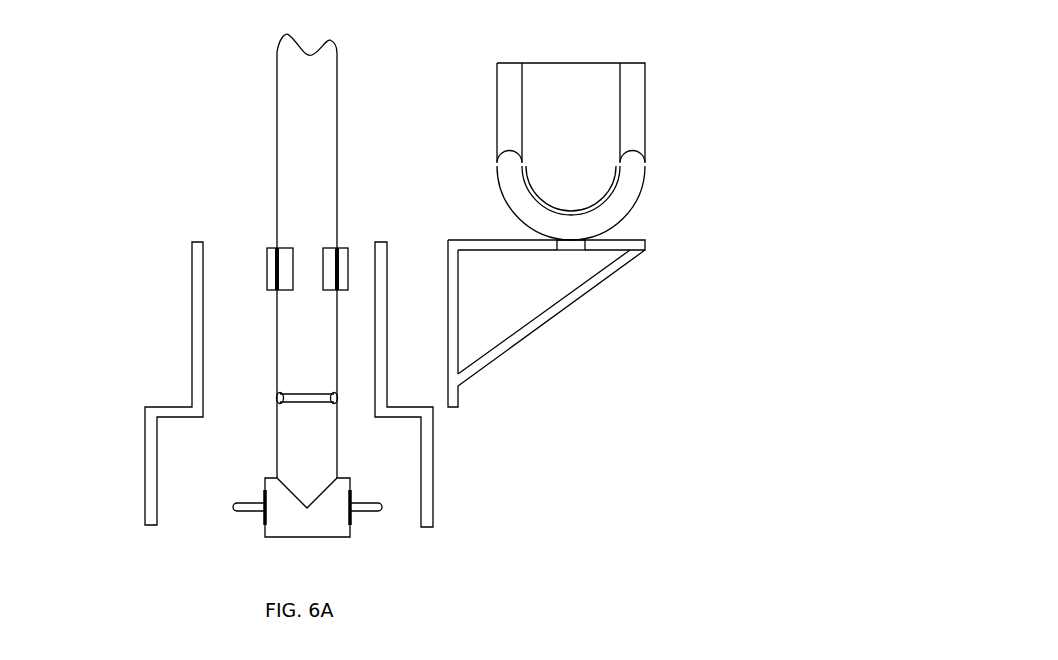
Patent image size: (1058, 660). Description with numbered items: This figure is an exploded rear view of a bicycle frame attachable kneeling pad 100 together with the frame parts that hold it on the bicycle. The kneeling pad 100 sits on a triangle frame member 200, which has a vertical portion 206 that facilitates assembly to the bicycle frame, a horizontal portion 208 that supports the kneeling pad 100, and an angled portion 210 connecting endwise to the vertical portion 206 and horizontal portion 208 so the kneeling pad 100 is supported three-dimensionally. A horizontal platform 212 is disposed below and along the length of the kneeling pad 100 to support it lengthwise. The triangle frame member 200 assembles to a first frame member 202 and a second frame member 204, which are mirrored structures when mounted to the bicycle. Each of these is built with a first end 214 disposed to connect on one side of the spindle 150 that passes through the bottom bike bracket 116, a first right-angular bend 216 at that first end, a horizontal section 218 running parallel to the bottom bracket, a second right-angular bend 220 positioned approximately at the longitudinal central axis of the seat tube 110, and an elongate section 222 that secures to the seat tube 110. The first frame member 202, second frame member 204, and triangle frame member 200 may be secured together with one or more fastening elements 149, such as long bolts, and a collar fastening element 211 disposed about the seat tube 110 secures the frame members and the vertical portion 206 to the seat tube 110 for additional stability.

The kneeling pad 100 is at (683, 45).
The seat tube 110 is at (337, 126).
The bottom bike bracket 116 is at (266, 479).
The fastening elements 149 is at (300, 392).
The spindle 150 is at (364, 512).
The triangle frame member 200 is at (564, 291).
The first frame member 202 is at (150, 383).
The second frame member 204 is at (472, 522).
The vertical portion 206 is at (448, 310).
The horizontal portion 208 is at (482, 241).
The angled portion 210 is at (545, 320).
The collar fastening element 211 is at (270, 254).
The horizontal platform 212 is at (572, 252).
The first end 214 is at (145, 505).
The first right-angular bend 216 is at (145, 410).
The horizontal section 218 is at (160, 421).
The second right-angular bend 220 is at (203, 410).
The elongate section 222 is at (192, 310).